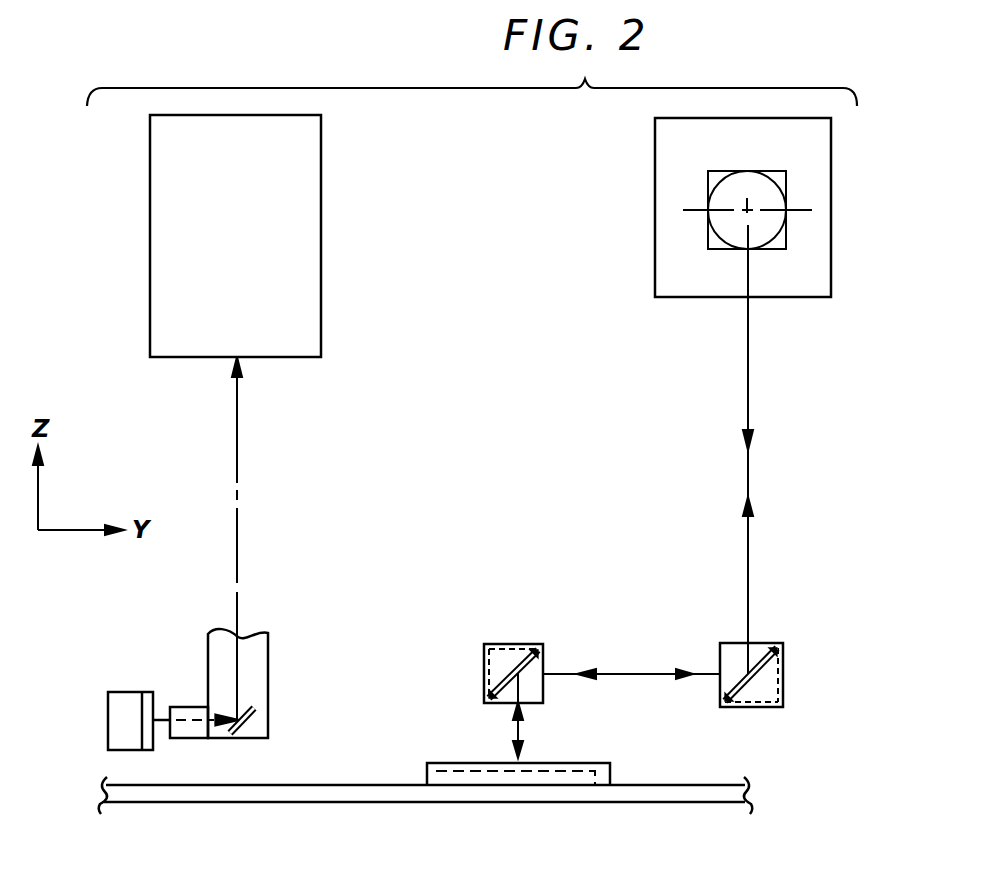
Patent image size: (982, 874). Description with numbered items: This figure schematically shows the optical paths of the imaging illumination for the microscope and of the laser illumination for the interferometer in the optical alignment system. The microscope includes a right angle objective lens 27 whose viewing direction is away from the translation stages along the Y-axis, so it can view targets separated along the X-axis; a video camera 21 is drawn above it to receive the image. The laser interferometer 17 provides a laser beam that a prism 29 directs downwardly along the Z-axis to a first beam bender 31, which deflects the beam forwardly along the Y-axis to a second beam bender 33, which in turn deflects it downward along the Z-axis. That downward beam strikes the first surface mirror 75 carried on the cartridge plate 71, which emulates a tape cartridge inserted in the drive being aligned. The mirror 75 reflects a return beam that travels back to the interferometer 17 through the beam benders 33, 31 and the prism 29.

The laser interferometer 17 is at (655, 177).
The video camera 21 is at (322, 295).
The right angle objective lens 27 is at (188, 739).
The prism 29 is at (780, 237).
The first beam bender 31 is at (784, 676).
The second beam bender 33 is at (513, 643).
The cartridge plate 71 is at (700, 785).
The first surface mirror 75 is at (560, 770).